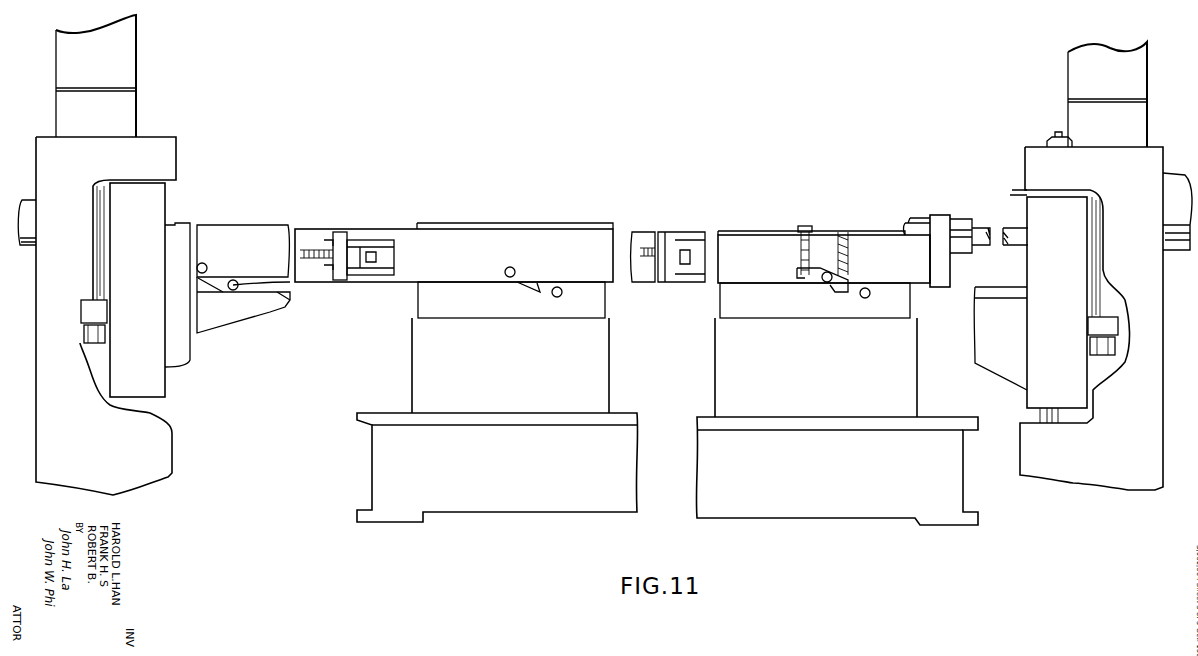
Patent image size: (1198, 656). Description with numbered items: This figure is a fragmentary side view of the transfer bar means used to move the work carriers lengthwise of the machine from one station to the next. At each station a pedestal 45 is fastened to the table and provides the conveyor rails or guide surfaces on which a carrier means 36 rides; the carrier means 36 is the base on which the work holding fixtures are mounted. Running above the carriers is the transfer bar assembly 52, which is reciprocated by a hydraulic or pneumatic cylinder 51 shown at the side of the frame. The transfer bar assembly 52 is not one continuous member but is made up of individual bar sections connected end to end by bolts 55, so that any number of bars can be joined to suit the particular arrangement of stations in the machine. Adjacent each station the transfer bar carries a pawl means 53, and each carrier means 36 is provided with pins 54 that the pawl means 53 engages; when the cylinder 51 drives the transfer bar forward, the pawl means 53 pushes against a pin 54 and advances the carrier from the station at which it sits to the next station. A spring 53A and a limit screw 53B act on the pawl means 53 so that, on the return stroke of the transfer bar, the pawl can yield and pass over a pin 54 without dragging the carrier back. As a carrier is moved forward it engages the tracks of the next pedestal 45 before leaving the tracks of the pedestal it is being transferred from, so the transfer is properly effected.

The carrier means 36 is at (412, 306).
The pedestal 45 is at (406, 366).
The hydraulic or pneumatic cylinder 51 is at (1175, 193).
The transfer bar assembly 52 is at (922, 278).
The pawl means 53 is at (848, 286).
The spring 53A is at (840, 228).
The limit screw 53B is at (802, 226).
The pins 54 is at (277, 298).
The bolts 55 is at (320, 250).